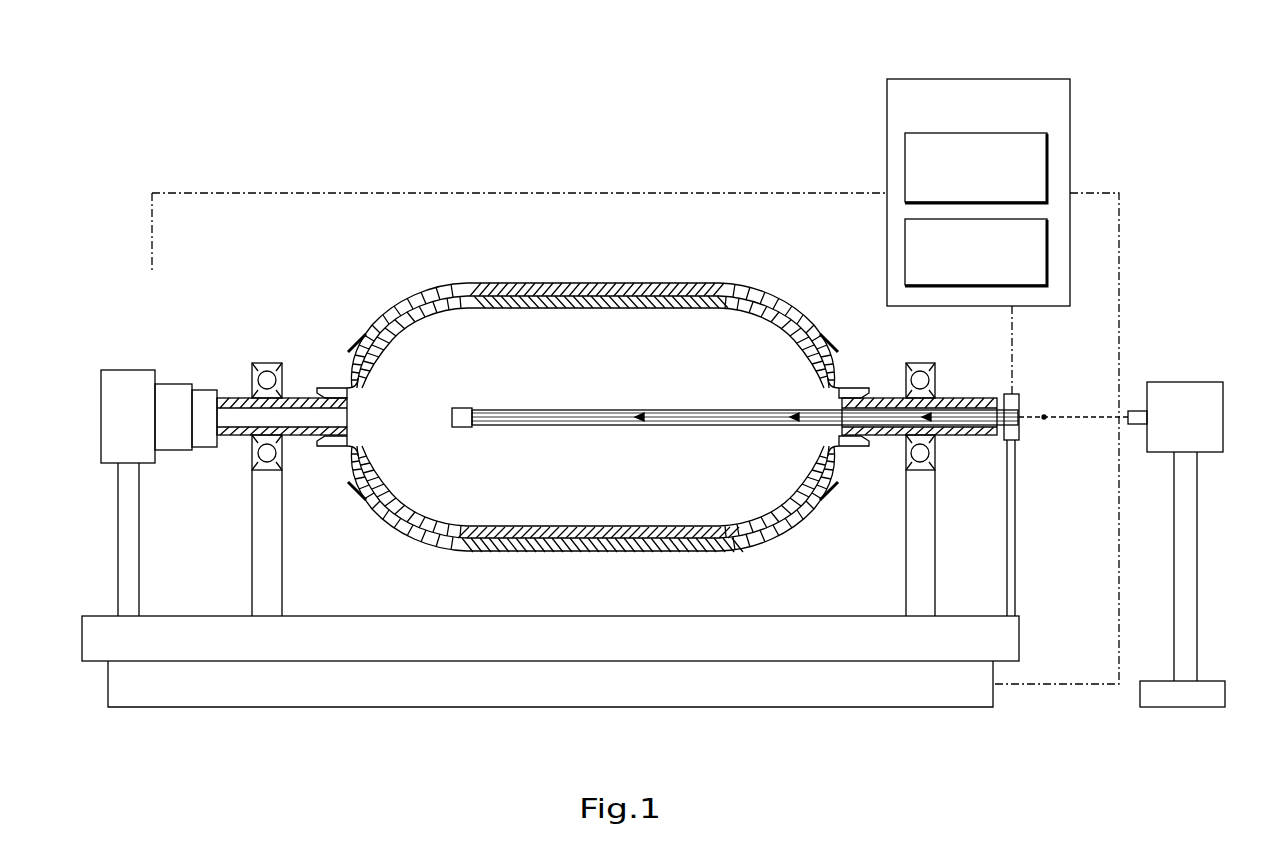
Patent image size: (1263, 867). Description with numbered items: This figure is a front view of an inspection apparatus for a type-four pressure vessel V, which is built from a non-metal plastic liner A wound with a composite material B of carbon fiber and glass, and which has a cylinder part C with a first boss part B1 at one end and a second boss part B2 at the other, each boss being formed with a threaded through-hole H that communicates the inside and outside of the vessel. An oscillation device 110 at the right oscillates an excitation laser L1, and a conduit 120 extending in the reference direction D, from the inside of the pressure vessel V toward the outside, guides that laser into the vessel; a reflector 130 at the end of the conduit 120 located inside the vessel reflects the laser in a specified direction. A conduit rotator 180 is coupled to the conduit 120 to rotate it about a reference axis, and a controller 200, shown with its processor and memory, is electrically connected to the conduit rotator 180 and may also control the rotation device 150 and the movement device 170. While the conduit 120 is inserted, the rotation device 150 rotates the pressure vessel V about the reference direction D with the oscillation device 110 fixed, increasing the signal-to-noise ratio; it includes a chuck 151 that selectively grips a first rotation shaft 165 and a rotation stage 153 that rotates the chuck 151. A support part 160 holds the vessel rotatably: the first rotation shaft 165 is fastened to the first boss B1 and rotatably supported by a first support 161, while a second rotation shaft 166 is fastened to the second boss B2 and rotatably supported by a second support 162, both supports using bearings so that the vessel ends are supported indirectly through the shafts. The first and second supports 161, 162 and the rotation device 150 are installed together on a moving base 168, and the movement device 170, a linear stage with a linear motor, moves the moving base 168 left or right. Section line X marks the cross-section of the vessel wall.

The oscillation device 110 is at (1185, 382).
The conduit 120 is at (688, 409).
The reflector 130 is at (460, 408).
The rotation device 150 is at (159, 445).
The chuck 151 is at (180, 384).
The rotation stage 153 is at (120, 372).
The support part 160 is at (232, 513).
The first support 161 is at (270, 540).
The second support 162 is at (927, 538).
The first rotation shaft 165 is at (310, 398).
The second rotation shaft 166 is at (882, 398).
The moving base 168 is at (1008, 637).
The movement device 170 is at (893, 708).
The conduit rotator 180 is at (1015, 398).
The controller 200 is at (975, 79).
The pressure vessel V is at (589, 270).
The liner A is at (620, 306).
The composite material B is at (716, 292).
The cylinder part C is at (462, 283).
The first boss part B1 is at (350, 385).
The second boss part B2 is at (838, 385).
The through-hole H is at (830, 397).
The section line X is at (443, 242).
The reference direction D is at (785, 243).
The excitation laser L1 is at (1045, 420).